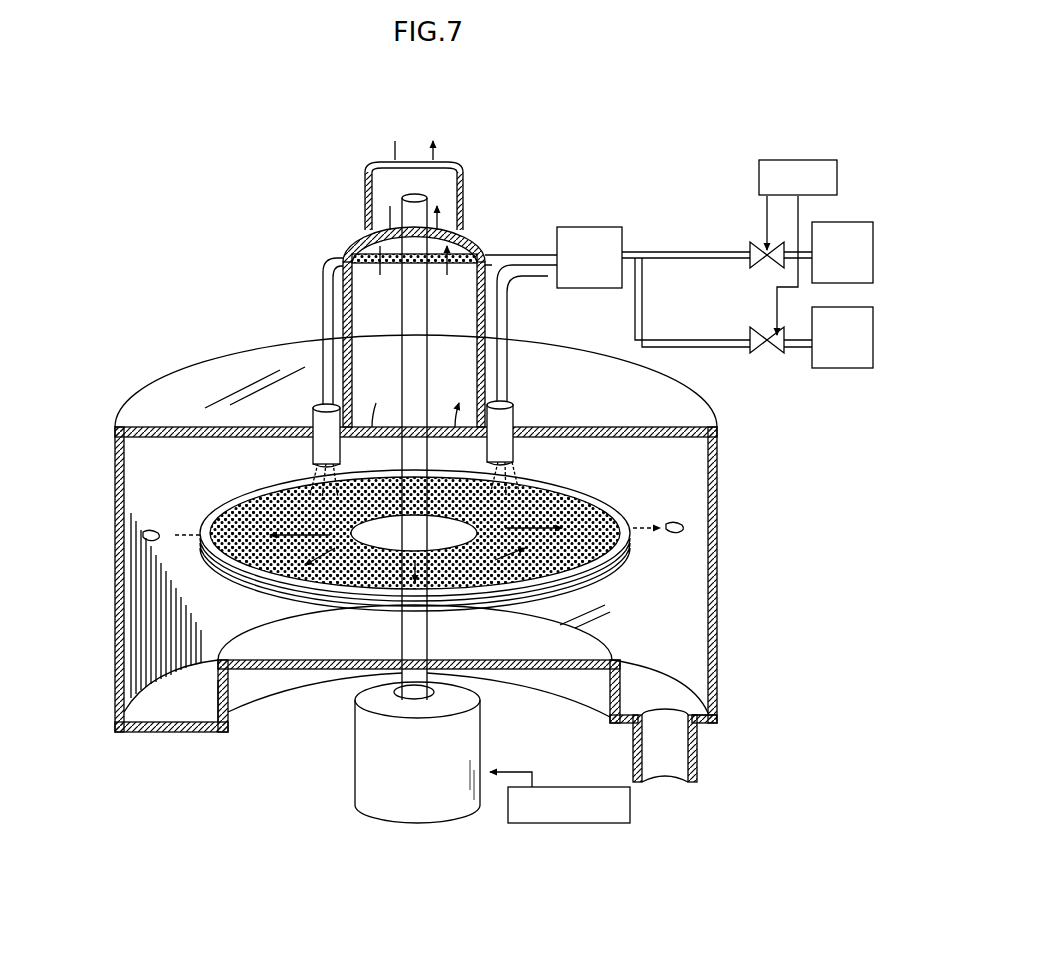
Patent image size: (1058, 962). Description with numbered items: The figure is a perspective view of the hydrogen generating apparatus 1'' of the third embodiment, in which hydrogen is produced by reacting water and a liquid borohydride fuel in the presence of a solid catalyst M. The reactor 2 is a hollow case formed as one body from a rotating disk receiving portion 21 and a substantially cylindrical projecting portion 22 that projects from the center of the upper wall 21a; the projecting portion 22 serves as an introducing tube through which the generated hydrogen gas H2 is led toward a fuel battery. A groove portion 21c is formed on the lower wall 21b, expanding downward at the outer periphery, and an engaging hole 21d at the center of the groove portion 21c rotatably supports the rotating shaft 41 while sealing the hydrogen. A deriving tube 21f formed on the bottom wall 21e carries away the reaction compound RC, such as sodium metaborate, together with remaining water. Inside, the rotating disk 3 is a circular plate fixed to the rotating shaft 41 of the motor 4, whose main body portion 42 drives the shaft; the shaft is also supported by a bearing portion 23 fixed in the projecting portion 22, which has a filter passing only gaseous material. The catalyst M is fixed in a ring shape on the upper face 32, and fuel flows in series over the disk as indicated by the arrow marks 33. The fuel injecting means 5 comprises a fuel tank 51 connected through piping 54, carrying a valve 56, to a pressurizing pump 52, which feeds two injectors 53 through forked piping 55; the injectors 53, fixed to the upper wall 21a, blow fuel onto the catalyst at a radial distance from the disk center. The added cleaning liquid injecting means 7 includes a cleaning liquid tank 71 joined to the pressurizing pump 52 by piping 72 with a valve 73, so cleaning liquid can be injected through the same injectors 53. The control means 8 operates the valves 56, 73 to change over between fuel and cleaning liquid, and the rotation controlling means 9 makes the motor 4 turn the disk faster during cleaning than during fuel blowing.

The hydrogen generating apparatus 1'' is at (122, 228).
The reactor 2 is at (115, 400).
The rotating disk receiving portion 21 is at (117, 555).
The upper wall 21a is at (170, 385).
The lower wall 21b is at (280, 672).
The groove portion 21c is at (235, 712).
The engaging hole 21d is at (440, 697).
The bottom wall 21e is at (720, 722).
The deriving tube 21f is at (700, 776).
The projecting portion 22 is at (478, 232).
The bearing portion 23 is at (355, 246).
The rotating disk 3 is at (628, 552).
The upper face 32 is at (618, 515).
The arrow mark 33 is at (300, 520).
The catalyst M is at (600, 490).
The compound RC is at (135, 530).
The hydrogen gas H2 is at (414, 149).
The motor 4 is at (488, 740).
The rotating shaft 41 is at (420, 200).
The main body portion 42 is at (365, 780).
The fuel injecting means 5 is at (620, 178).
The fuel tank 51 is at (873, 253).
The pressurizing pump 52 is at (590, 226).
The injector 53 is at (315, 415).
The piping 54 is at (658, 251).
The piping 55 is at (540, 254).
The valve 56 is at (762, 240).
The cleaning liquid injecting means 7 is at (795, 365).
The cleaning liquid tank 71 is at (873, 338).
The piping 72 is at (665, 339).
The valve 73 is at (762, 323).
The control means 8 is at (837, 178).
The rotation controlling means 9 is at (632, 804).